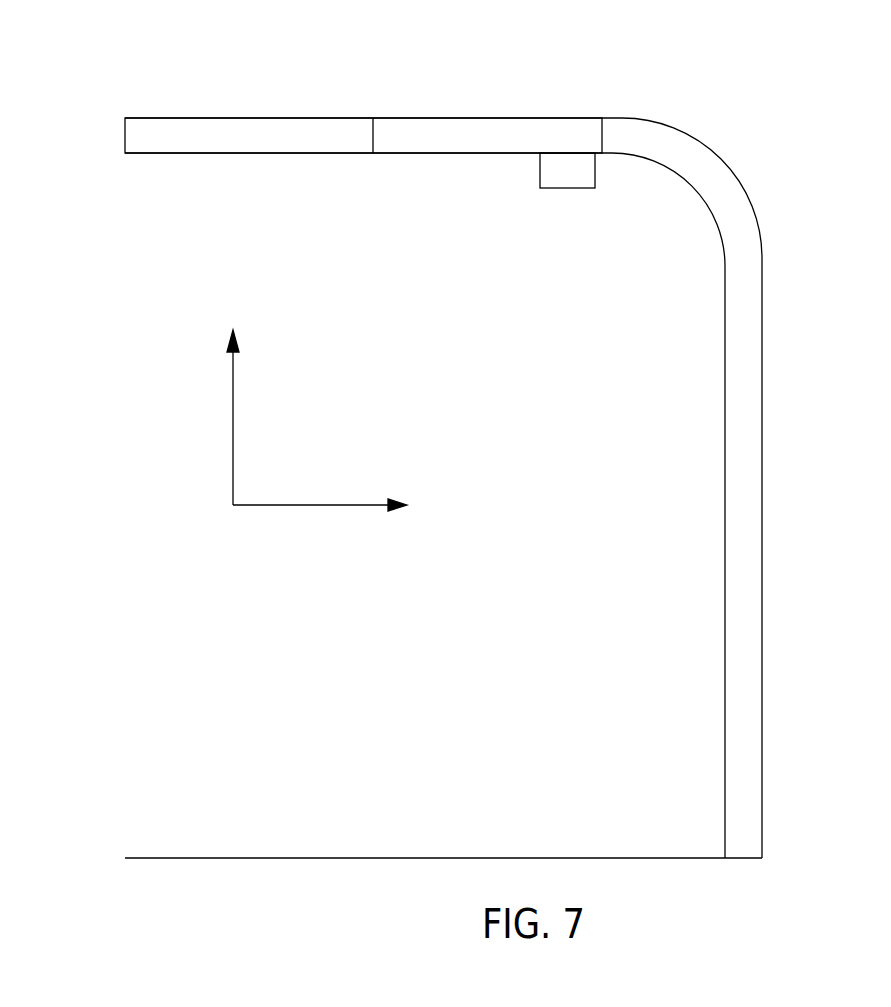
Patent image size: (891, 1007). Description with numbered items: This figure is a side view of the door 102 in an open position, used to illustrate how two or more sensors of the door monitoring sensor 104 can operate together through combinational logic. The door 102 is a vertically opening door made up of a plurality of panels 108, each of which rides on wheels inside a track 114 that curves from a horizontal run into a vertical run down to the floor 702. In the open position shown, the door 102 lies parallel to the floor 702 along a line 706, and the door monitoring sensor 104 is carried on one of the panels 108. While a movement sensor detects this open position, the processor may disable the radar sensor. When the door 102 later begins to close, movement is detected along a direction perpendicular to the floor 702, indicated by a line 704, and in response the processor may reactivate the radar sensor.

The door 102 is at (152, 118).
The door monitoring sensor 104 is at (567, 170).
The panel 108 is at (260, 128).
The track 114 is at (762, 610).
The floor 702 is at (327, 858).
The line 704 is at (235, 380).
The line 706 is at (320, 505).